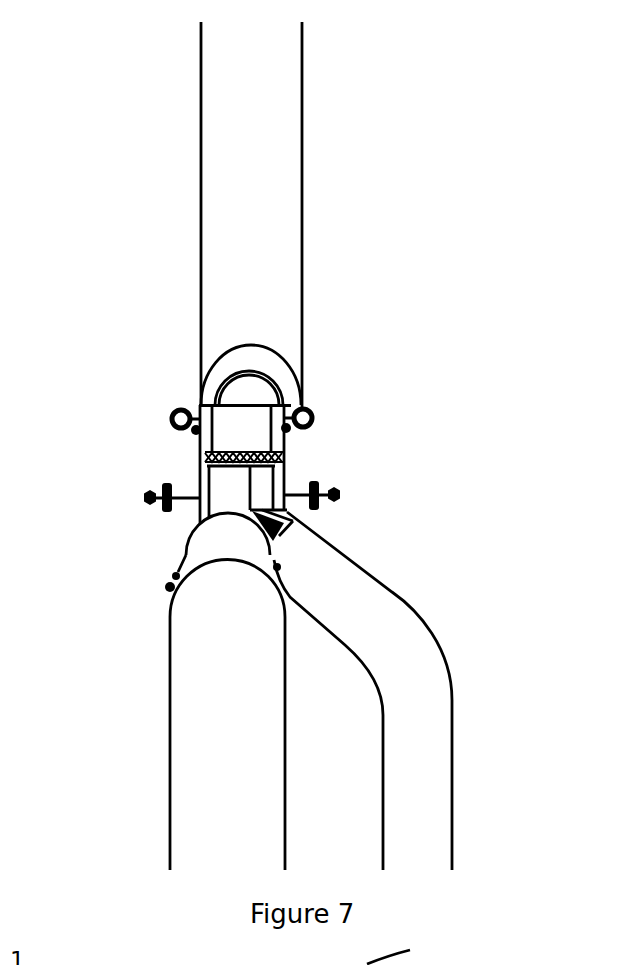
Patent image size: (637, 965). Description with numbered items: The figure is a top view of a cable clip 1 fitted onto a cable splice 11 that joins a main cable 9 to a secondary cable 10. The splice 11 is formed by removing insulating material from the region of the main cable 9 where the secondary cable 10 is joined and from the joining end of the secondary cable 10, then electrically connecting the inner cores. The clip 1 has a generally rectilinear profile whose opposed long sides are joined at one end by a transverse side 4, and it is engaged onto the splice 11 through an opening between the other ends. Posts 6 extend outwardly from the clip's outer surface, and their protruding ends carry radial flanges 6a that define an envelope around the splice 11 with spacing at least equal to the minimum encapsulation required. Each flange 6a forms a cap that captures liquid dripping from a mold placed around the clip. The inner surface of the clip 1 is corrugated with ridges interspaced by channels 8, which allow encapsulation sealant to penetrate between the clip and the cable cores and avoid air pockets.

The cable clip 1 is at (164, 451).
The transverse side 4 is at (233, 420).
The post 6 is at (314, 418).
The radial flange 6a is at (146, 497).
The channel 8 is at (300, 463).
The main cable 9 is at (235, 208).
The secondary cable 10 is at (417, 748).
The splice 11 is at (250, 468).